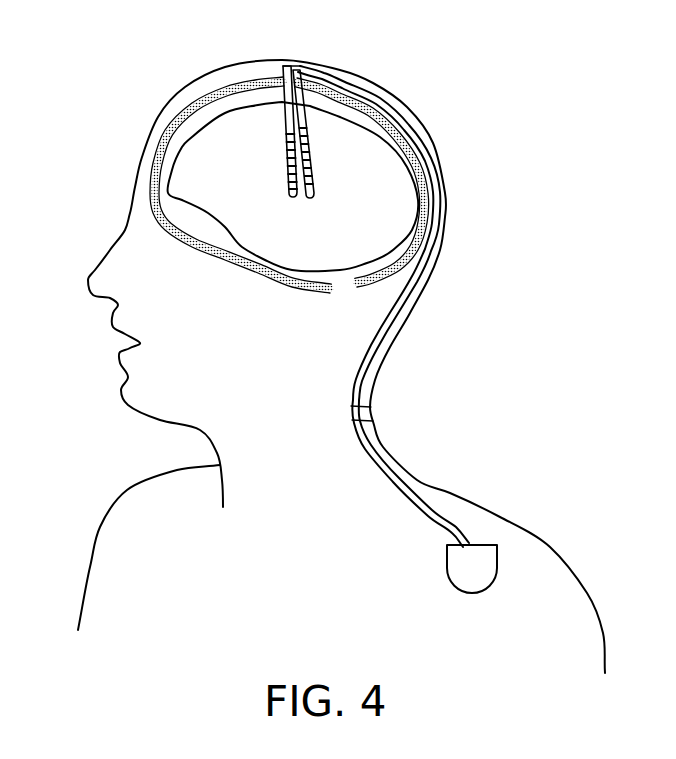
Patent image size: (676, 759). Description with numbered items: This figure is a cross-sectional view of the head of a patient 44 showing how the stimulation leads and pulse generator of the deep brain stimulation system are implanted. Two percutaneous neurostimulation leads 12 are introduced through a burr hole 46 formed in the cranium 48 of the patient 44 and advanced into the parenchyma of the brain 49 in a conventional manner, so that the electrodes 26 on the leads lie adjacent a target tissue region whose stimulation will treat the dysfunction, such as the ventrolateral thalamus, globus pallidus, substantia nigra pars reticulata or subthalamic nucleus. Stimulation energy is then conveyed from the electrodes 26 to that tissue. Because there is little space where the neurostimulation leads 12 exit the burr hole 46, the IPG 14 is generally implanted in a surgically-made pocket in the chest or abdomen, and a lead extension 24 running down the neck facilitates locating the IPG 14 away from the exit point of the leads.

The percutaneous neurostimulation leads 12 is at (285, 123).
The IPG 14 is at (482, 558).
The lead extension 24 is at (368, 418).
The electrodes 26 is at (311, 179).
The patient 44 is at (133, 318).
The burr hole 46 is at (286, 73).
The cranium 48 is at (213, 85).
The brain 49 is at (378, 142).